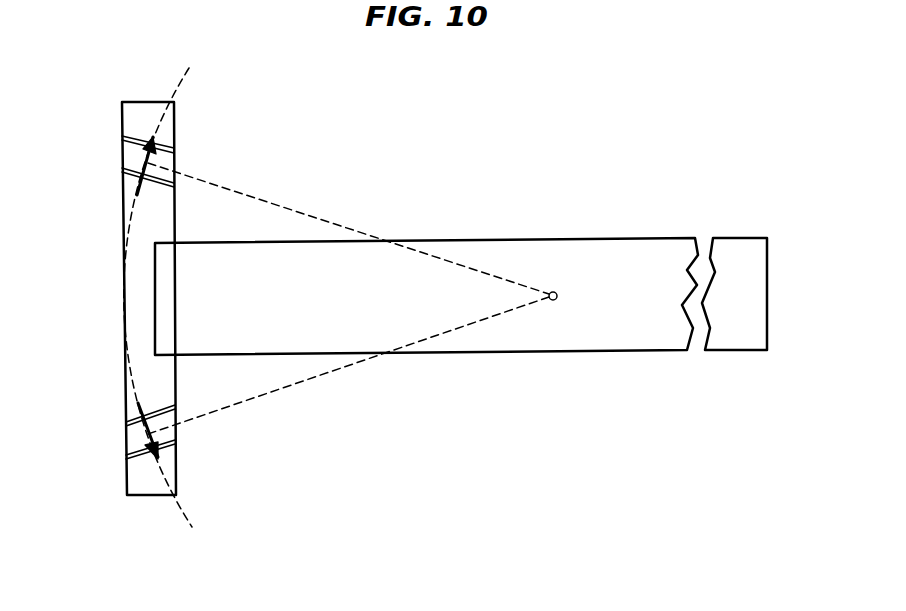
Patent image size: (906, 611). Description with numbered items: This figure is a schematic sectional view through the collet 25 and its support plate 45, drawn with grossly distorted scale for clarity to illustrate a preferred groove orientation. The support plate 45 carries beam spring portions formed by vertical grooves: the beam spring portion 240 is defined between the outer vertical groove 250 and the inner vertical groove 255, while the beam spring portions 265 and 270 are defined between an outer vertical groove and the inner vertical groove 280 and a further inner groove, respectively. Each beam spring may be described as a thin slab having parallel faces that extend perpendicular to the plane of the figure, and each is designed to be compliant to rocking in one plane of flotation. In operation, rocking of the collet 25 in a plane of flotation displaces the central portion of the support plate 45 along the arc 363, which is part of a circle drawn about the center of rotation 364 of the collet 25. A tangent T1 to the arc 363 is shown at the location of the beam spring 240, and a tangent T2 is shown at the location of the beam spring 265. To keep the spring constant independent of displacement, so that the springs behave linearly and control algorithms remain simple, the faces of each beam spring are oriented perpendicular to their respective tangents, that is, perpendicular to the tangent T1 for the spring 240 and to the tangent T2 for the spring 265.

The collet 25 is at (768, 295).
The support plate 45 is at (175, 120).
The beam spring portion 240 is at (123, 155).
The outer vertical groove 250 is at (175, 155).
The inner vertical groove 255 is at (175, 188).
The beam spring portion 265 is at (126, 440).
The beam spring portion 270 is at (175, 442).
The inner vertical groove 280 is at (175, 407).
The arc 363 is at (190, 78).
The center of rotation 364 is at (567, 297).
The tangent T1 is at (148, 147).
The tangent T2 is at (153, 452).